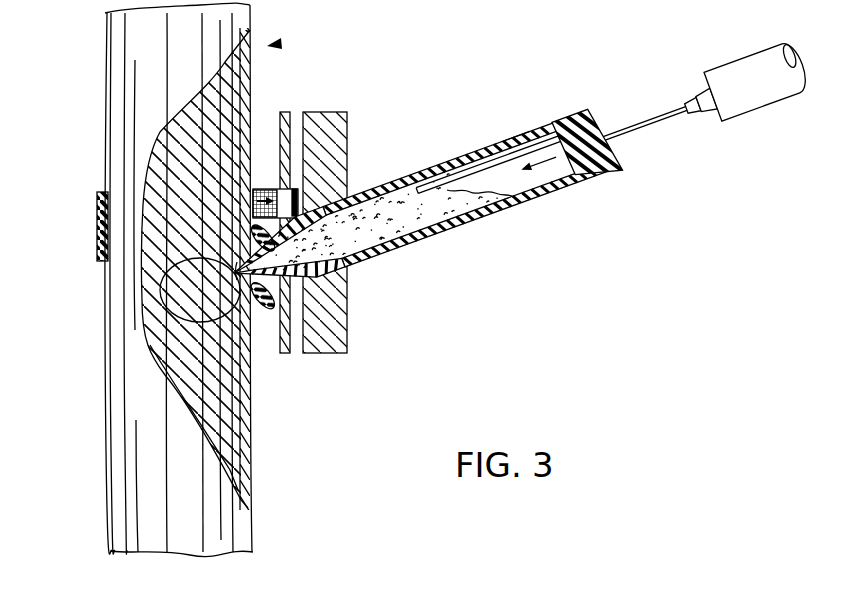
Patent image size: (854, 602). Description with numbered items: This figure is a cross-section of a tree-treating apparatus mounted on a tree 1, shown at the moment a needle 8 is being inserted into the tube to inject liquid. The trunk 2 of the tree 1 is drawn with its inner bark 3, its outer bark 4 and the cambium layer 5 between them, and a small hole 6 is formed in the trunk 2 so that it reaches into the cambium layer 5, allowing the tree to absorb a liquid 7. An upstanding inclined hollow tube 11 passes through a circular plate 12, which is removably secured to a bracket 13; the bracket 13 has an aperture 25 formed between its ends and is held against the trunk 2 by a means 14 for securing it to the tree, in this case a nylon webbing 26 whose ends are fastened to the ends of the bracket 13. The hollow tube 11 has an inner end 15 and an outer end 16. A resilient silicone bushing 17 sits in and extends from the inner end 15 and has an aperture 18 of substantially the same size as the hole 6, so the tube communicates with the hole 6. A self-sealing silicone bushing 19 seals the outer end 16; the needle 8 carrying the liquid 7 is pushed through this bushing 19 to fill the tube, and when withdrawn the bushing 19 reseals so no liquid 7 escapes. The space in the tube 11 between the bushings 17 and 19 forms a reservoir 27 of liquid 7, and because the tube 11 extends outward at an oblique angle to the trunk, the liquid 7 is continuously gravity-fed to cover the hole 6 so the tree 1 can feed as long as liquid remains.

The tree 1 is at (272, 44).
The trunk 2 is at (107, 95).
The inner bark 3 is at (197, 350).
The outer bark 4 is at (243, 97).
The cambium layer 5 is at (238, 272).
The hole 6 is at (235, 268).
The liquid 7 is at (467, 220).
The needle 8 is at (743, 100).
The hollow tube 11 is at (519, 133).
The circular plate 12 is at (348, 312).
The bracket 13 is at (285, 355).
The means for securing the bracket body to the tree 14 is at (250, 192).
The inner end 15 is at (380, 257).
The outer end 16 is at (537, 143).
The resilient bushing 17 is at (262, 320).
The aperture 18 is at (243, 268).
The self-sealing bushing 19 is at (600, 110).
The aperture 25 is at (323, 355).
The nylon webbing 26 is at (100, 213).
The reservoir 27 is at (513, 178).